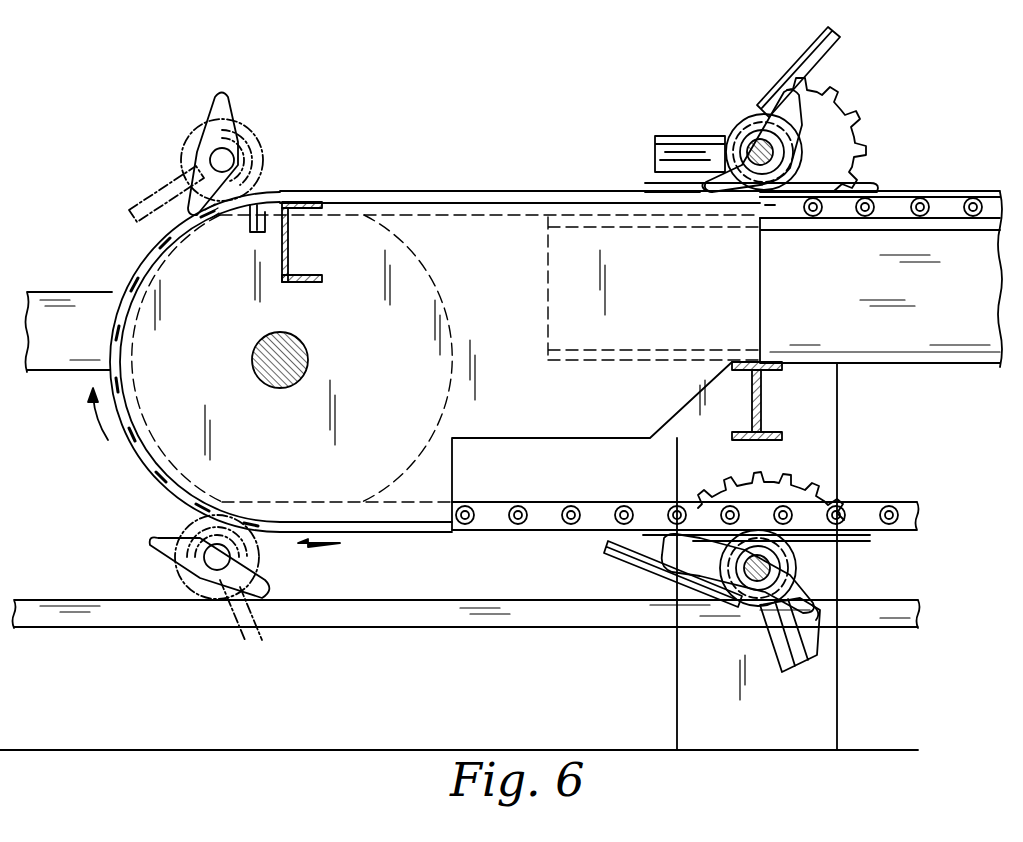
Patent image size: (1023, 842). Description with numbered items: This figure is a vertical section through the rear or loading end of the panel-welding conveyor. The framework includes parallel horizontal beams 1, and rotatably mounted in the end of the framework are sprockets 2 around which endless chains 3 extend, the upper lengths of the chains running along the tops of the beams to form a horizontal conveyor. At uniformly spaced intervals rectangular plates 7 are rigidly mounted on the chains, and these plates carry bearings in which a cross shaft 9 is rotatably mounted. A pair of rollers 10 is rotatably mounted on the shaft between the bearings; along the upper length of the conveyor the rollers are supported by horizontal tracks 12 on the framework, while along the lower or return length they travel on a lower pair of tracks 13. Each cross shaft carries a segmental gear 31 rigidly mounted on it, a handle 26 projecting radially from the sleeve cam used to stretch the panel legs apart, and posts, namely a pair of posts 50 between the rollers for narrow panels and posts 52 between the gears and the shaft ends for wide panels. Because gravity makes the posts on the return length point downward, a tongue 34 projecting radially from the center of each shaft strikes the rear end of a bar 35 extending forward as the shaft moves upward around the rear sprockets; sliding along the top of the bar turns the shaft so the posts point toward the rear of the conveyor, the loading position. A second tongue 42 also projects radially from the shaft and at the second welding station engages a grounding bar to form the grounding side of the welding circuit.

The horizontal beam 1 is at (900, 340).
The sprocket 2 is at (450, 300).
The endless chain 3 is at (132, 265).
The rectangular plate 7 is at (864, 563).
The cross shaft 9 is at (715, 607).
The roller 10 is at (790, 205).
The horizontal track 12 is at (260, 225).
The lower track 13 is at (482, 630).
The handle 26 is at (610, 547).
The segmental gear 31 is at (876, 483).
The tongue 34 is at (836, 639).
The bar 35 is at (500, 196).
The second tongue 42 is at (678, 584).
The post 50 is at (718, 398).
The post 52 is at (777, 650).